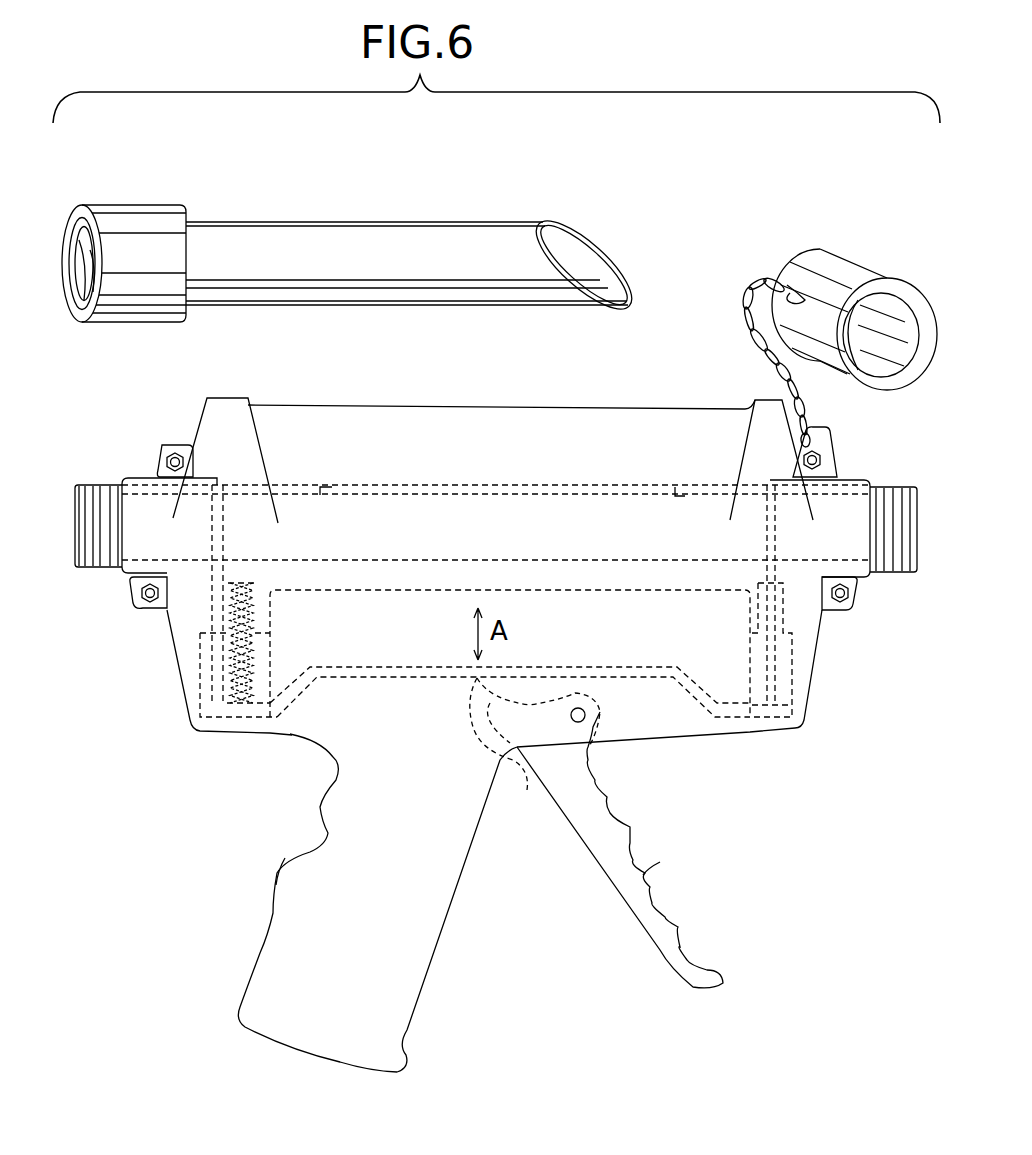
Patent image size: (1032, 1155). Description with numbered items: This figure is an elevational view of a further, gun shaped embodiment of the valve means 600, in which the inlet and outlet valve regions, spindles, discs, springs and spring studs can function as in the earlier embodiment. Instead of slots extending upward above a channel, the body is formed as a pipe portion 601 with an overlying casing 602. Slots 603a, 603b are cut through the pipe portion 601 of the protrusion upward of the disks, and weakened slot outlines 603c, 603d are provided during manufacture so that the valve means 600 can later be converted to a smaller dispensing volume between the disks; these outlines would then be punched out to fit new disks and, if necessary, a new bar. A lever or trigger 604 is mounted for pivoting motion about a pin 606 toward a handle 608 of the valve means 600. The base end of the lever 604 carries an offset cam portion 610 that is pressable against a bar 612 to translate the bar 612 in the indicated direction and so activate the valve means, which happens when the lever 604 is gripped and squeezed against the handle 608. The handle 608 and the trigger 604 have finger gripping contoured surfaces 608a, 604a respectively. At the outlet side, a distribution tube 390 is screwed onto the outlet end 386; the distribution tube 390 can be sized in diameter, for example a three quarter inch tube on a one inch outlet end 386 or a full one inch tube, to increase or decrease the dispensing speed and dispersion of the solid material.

The distribution tube 390 is at (367, 250).
The outlet end 386 is at (884, 487).
The valve means 600 is at (530, 818).
The pipe portion 601 is at (457, 493).
The casing 602 is at (627, 412).
The slot 603a is at (217, 482).
The slot 603b is at (770, 482).
The weakened slot outline 603c is at (332, 493).
The weakened slot outline 603d is at (675, 490).
The lever or trigger 604 is at (605, 833).
The finger gripping contoured surface 604a is at (647, 870).
The pin 606 is at (585, 715).
The handle 608 is at (407, 945).
The finger gripping contoured surface 608a is at (275, 903).
The offset cam portion 610 is at (535, 748).
The bar 612 is at (583, 665).